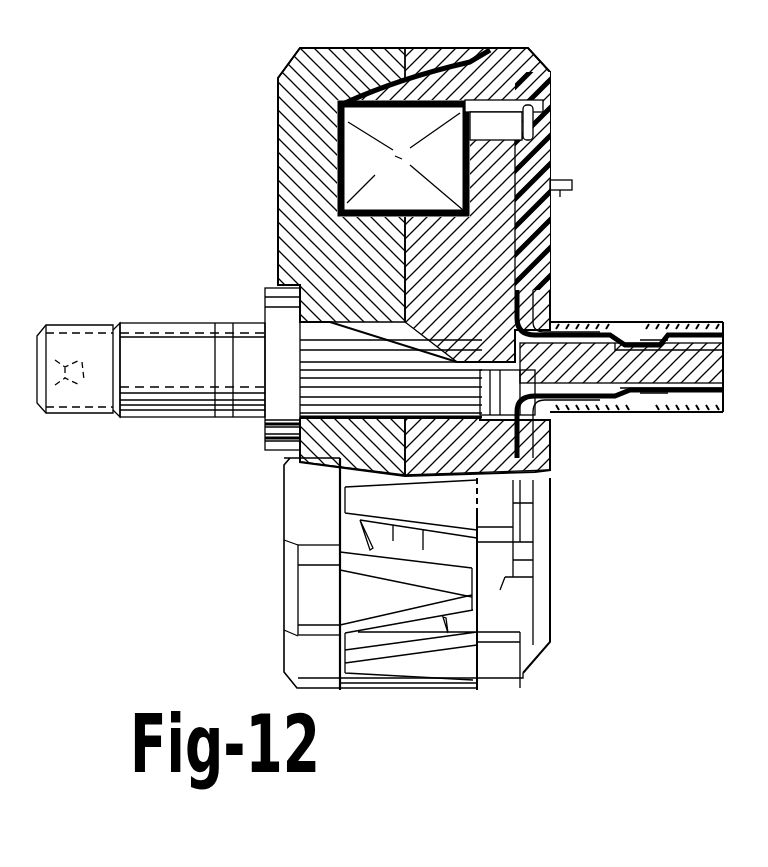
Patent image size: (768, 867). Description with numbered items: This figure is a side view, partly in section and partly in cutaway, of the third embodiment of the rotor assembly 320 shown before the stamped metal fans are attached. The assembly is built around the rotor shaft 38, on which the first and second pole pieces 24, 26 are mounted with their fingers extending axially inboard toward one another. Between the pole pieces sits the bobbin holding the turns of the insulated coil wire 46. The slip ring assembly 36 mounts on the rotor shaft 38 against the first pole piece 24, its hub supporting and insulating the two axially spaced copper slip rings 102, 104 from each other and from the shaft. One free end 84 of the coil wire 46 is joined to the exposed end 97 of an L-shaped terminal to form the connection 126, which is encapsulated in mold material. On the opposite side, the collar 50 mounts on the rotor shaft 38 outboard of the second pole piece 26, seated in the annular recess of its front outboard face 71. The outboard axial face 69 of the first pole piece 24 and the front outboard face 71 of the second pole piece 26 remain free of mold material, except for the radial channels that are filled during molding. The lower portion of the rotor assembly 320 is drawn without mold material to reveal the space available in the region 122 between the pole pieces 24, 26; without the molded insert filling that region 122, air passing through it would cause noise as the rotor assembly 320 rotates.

The first pole piece 24 is at (511, 607).
The second pole piece 26 is at (290, 650).
The slip ring assembly 36 is at (681, 321).
The rotor shaft 38 is at (182, 345).
The coil wire 46 is at (340, 110).
The collar 50 is at (268, 300).
The outboard axial face 69 is at (552, 554).
The front outboard face 71 is at (288, 590).
The free end of coil wire 84 is at (493, 105).
The exposed end of terminal 97 is at (533, 134).
The slip ring 102 is at (708, 323).
The slip ring 104 is at (643, 321).
The region 122 is at (352, 530).
The connection 126 is at (530, 110).
The rotor assembly 320 is at (524, 689).